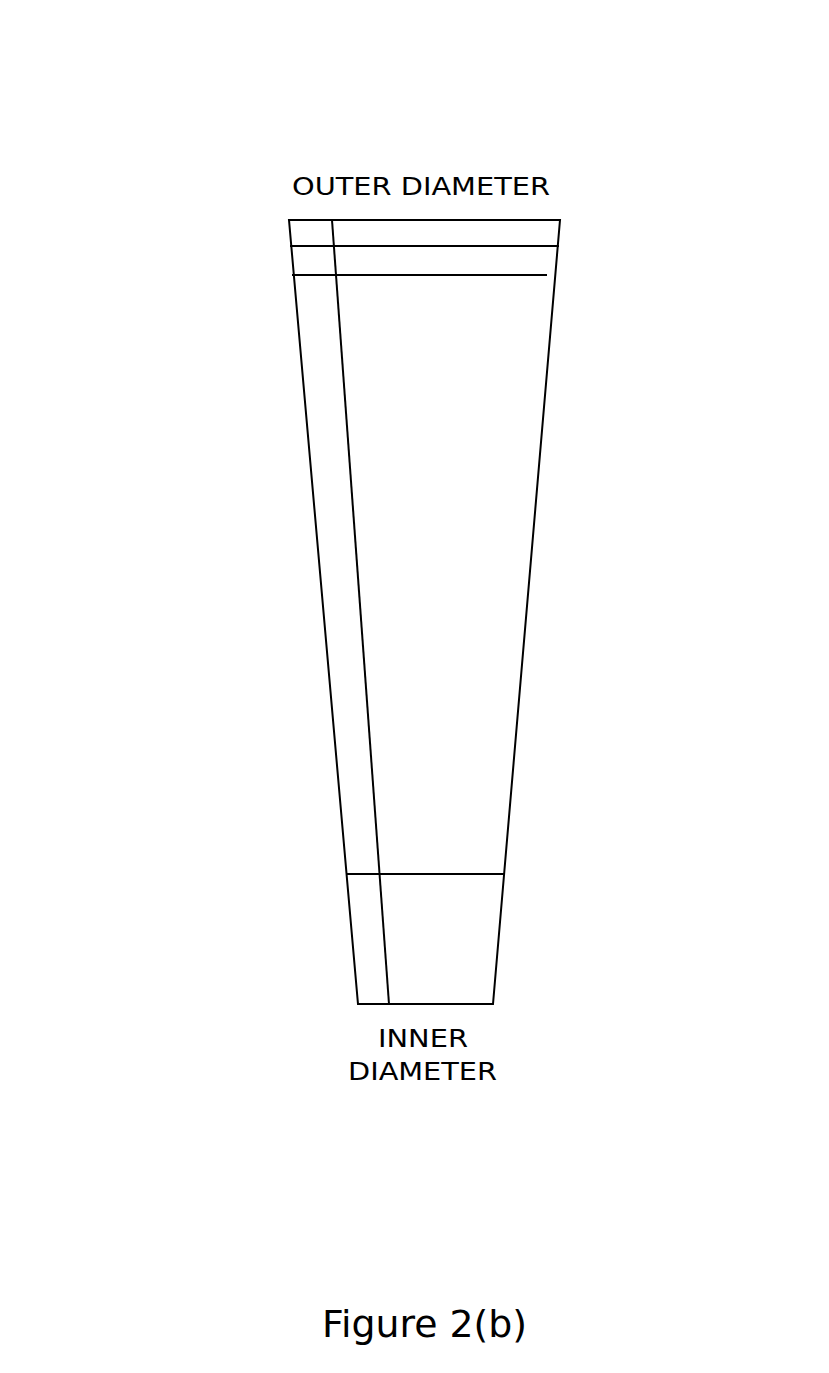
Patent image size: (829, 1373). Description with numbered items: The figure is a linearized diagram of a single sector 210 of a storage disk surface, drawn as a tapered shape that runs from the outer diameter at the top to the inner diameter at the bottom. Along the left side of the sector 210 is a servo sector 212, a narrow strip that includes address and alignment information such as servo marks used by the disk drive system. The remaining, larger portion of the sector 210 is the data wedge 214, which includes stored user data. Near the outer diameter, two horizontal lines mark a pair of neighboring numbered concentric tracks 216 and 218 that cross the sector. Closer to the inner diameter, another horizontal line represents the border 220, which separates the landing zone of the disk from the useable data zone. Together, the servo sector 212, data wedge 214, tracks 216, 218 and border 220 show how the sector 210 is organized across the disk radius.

The sector 210 is at (190, 119).
The servo sector 212 is at (315, 446).
The data wedge 214 is at (449, 632).
The numbered concentric track 216 is at (578, 232).
The numbered concentric track 218 is at (578, 274).
The border 220 is at (537, 873).